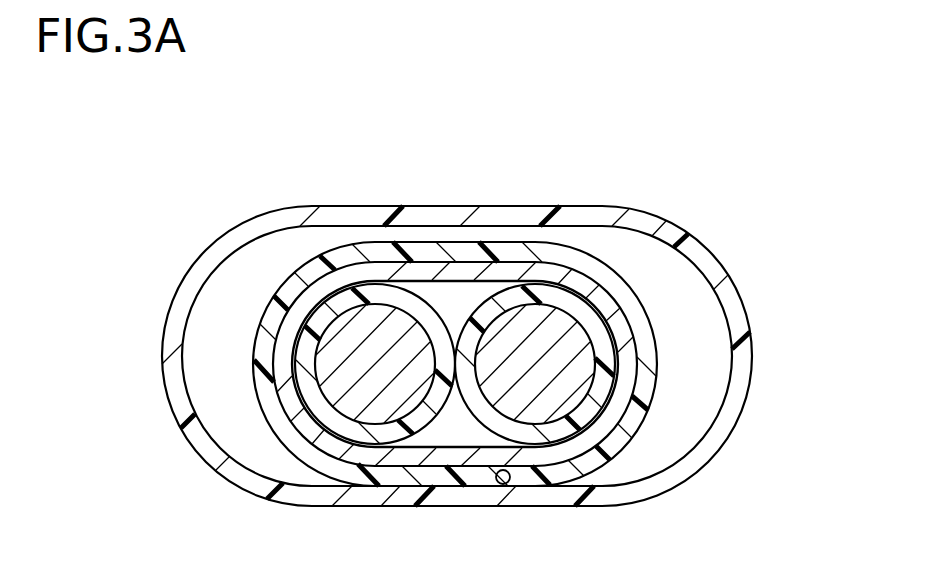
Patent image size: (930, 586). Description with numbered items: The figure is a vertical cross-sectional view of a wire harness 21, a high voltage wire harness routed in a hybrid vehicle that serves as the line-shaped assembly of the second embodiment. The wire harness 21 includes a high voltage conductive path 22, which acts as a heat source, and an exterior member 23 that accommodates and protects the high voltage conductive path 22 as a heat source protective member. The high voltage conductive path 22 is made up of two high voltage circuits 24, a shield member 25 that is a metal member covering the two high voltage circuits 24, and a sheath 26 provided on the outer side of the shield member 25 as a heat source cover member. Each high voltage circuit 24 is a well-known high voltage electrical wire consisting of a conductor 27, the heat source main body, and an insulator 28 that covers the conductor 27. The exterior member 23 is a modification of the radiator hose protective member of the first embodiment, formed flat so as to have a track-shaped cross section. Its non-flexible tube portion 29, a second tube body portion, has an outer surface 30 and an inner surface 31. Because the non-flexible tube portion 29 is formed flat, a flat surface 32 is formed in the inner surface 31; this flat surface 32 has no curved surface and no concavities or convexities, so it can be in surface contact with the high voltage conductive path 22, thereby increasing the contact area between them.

The wire harness 21 is at (697, 157).
The high voltage conductive path 22 is at (583, 244).
The exterior member 23 is at (577, 207).
The high voltage circuit 24 is at (272, 142).
The shield member 25 is at (488, 268).
The sheath 26 is at (513, 248).
The conductor 27 is at (345, 330).
The insulator 28 is at (362, 292).
The non-flexible tube portion 29 is at (632, 492).
The outer surface 30 is at (713, 455).
The inner surface 31 is at (708, 428).
The flat surface 32 is at (493, 484).